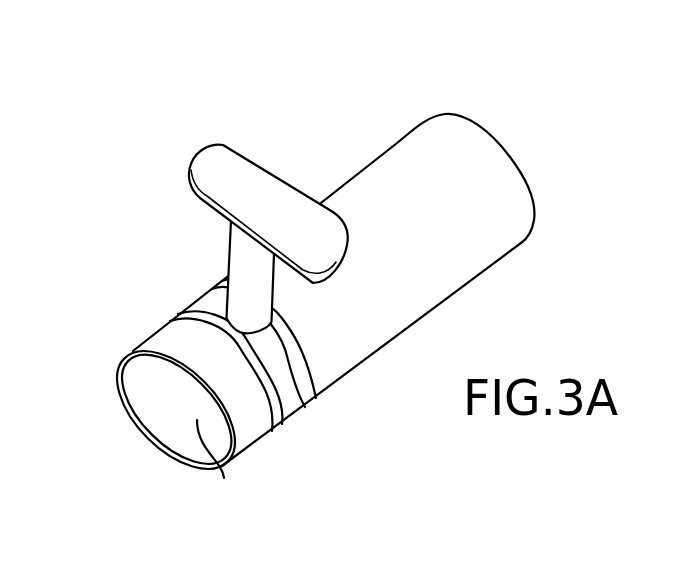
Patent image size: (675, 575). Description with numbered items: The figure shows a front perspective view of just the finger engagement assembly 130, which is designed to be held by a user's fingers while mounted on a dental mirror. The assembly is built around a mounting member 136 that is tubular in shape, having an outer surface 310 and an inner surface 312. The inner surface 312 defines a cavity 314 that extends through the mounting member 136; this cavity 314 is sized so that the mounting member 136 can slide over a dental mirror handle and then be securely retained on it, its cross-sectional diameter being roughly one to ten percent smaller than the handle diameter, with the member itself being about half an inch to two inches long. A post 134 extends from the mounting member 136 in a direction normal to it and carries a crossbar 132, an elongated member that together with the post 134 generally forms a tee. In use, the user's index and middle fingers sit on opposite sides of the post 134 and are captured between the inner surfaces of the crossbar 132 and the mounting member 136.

The finger engagement assembly 130 is at (370, 98).
The crossbar 132 is at (200, 152).
The post 134 is at (238, 266).
The mounting member 136 is at (423, 229).
The outer surface 310 is at (130, 423).
The inner surface 312 is at (167, 452).
The cavity 314 is at (224, 478).